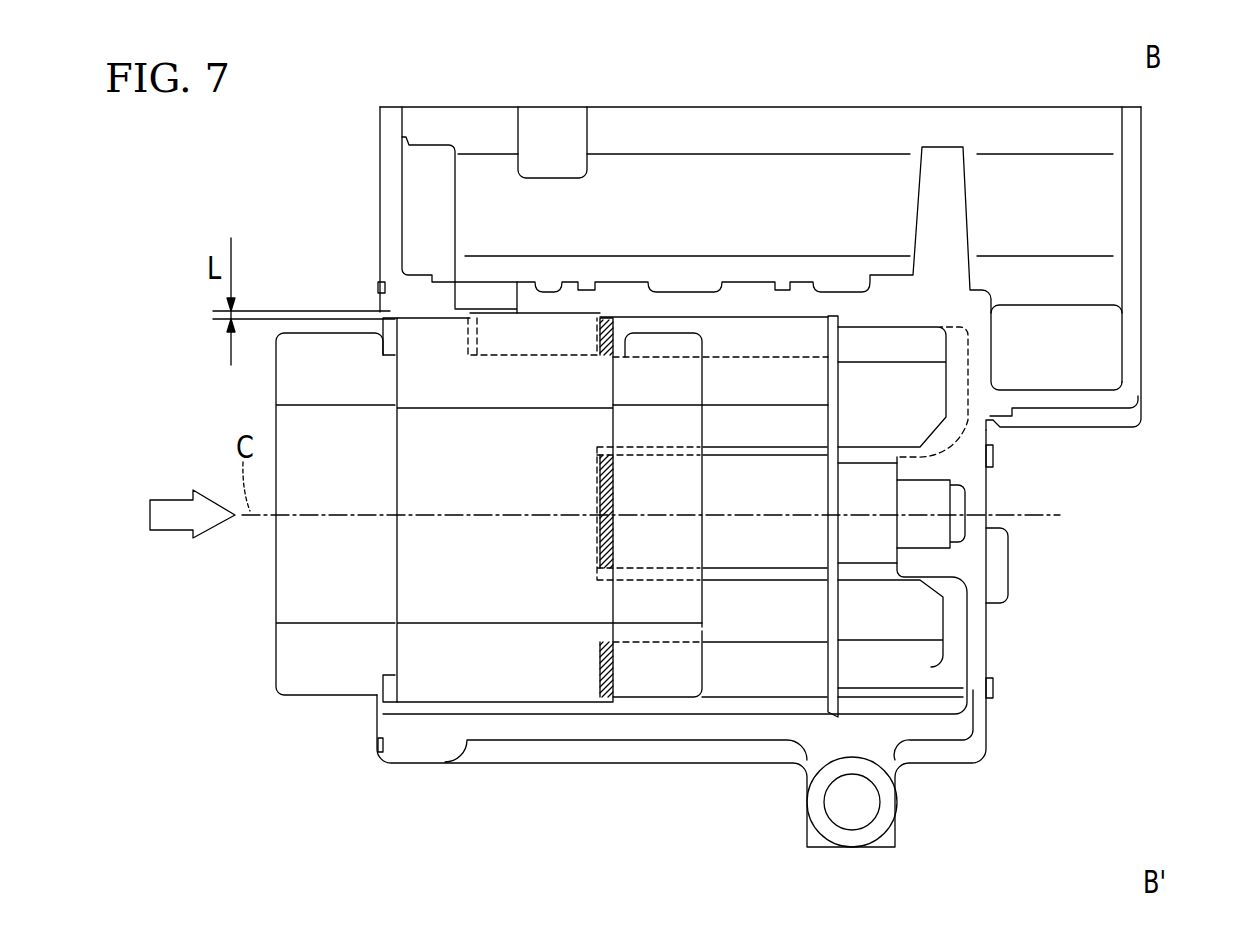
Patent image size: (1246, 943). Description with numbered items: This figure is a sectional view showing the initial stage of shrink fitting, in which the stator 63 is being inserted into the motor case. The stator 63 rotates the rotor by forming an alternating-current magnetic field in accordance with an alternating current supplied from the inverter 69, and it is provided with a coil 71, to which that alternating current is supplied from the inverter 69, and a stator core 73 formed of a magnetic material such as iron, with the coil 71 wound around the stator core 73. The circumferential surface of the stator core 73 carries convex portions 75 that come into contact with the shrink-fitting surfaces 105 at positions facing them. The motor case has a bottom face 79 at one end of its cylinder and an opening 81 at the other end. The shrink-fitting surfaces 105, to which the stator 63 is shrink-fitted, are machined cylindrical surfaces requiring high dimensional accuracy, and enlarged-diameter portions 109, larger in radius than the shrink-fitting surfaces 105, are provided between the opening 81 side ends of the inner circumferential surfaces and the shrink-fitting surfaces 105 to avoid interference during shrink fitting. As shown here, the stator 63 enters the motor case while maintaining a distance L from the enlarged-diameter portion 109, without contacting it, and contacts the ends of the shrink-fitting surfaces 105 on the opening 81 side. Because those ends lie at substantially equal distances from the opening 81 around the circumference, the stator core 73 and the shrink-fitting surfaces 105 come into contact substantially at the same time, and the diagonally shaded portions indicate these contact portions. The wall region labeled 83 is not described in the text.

The stator 63 is at (270, 700).
The inverter 69 is at (658, 95).
The coil 71 is at (283, 593).
The stator core 73 is at (478, 628).
The convex portion 75 is at (494, 312).
The bottom face 79 is at (988, 592).
The opening 81 is at (390, 708).
The side wall 83 is at (1135, 265).
The shrink-fitting surface 105 is at (741, 350).
The enlarged-diameter portion 109 is at (540, 320).